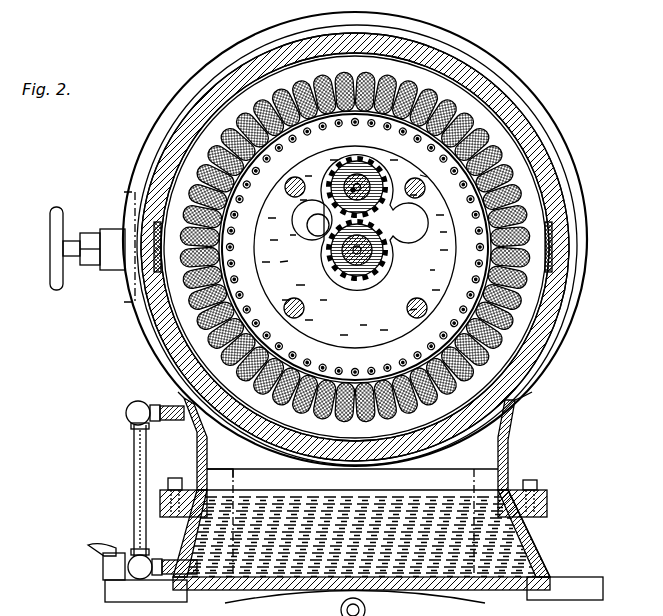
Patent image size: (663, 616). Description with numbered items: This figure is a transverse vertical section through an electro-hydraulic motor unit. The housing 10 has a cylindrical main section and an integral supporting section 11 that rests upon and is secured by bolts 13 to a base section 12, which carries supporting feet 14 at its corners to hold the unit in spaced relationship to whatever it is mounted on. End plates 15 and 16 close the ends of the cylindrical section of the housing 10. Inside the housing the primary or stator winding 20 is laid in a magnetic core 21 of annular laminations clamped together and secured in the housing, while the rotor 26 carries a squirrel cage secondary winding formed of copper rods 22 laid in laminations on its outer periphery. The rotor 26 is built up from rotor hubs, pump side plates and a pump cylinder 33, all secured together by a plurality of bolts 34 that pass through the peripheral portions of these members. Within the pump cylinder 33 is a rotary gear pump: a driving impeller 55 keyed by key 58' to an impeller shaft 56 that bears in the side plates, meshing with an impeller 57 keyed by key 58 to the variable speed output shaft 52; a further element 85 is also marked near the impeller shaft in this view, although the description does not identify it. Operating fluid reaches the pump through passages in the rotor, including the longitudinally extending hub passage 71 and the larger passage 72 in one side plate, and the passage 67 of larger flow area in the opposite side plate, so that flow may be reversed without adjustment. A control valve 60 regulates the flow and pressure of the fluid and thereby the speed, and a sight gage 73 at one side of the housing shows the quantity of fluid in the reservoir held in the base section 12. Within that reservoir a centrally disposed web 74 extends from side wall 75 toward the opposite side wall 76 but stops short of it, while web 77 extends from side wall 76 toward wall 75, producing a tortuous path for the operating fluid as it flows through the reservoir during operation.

The housing 10 is at (507, 88).
The supporting section 11 is at (515, 416).
The base section 12 is at (530, 545).
The bolts 13 is at (178, 478).
The supporting feet 14 is at (603, 582).
The end plate 15 is at (355, 604).
The end plate 16 is at (142, 595).
The primary winding 20 is at (413, 86).
The magnetic core 21 is at (303, 64).
The rods 22 is at (335, 373).
The rotor 26 is at (243, 190).
The pump cylinder 33 is at (355, 247).
The bolts 34 is at (290, 197).
The output shaft 52 is at (383, 253).
The driving impeller 55 is at (365, 175).
The impeller shaft 56 is at (350, 165).
The impeller 57 is at (368, 268).
The key 58 is at (377, 241).
The key 58' is at (390, 164).
The control valve 60 is at (50, 248).
The passage 67 is at (374, 223).
The passage 71 is at (318, 236).
The passage 72 is at (305, 228).
The sight gage 73 is at (134, 450).
The web 74 is at (465, 472).
The side wall 75 is at (540, 552).
The side wall 76 is at (192, 525).
The web 77 is at (220, 472).
The pin 85 is at (351, 190).